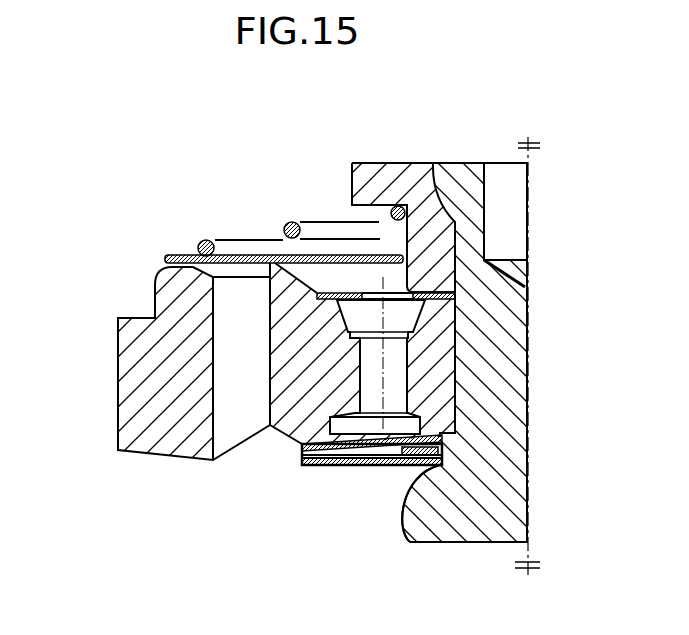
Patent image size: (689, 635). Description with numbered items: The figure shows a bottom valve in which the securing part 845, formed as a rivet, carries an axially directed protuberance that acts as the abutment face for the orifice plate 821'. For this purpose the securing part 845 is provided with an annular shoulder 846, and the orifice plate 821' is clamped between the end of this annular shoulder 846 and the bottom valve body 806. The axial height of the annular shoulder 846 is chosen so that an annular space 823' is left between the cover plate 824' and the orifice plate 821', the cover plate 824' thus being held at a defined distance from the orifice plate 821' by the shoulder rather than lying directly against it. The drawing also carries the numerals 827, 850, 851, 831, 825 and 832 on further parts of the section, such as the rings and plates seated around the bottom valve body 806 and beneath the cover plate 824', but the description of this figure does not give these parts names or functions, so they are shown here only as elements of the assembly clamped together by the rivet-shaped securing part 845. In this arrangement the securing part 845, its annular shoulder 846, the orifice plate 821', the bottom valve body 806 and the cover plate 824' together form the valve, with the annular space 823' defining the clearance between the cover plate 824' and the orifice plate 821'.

The bottom valve body 806 is at (150, 388).
The spacer ring 827 is at (232, 312).
The seal plate 850 is at (176, 255).
The O-ring 851 is at (289, 223).
The securing part 845 is at (479, 290).
The orifice plate 821' is at (467, 372).
The annular space 823' is at (459, 425).
The annular shoulder 846 is at (443, 451).
The washer 831 is at (320, 444).
The support plate 825 is at (302, 461).
The cover plate 824' is at (347, 517).
The seat 832 is at (422, 467).